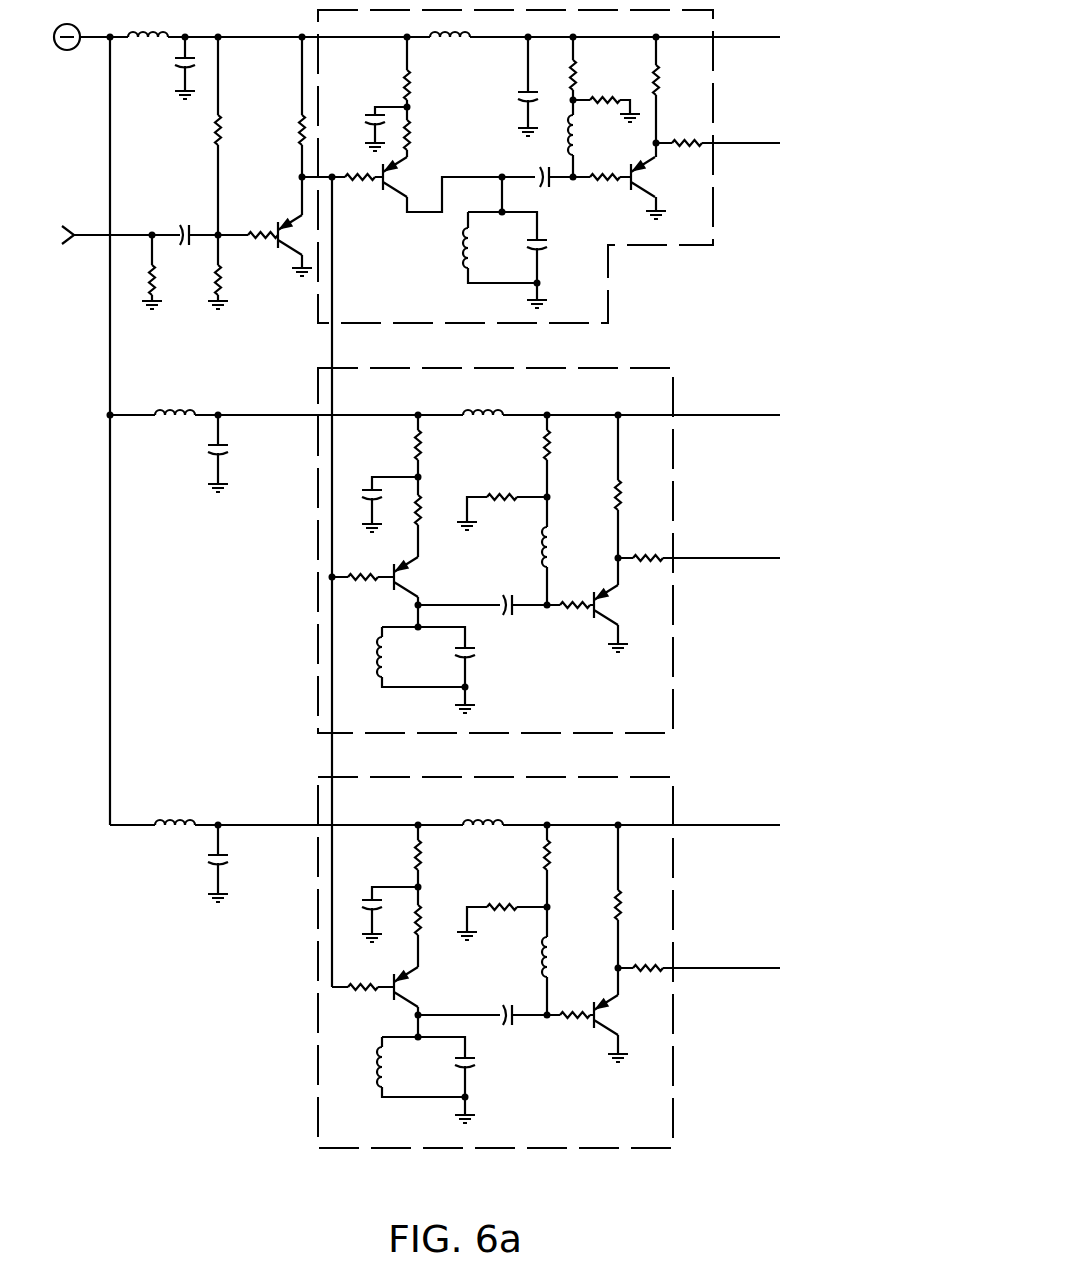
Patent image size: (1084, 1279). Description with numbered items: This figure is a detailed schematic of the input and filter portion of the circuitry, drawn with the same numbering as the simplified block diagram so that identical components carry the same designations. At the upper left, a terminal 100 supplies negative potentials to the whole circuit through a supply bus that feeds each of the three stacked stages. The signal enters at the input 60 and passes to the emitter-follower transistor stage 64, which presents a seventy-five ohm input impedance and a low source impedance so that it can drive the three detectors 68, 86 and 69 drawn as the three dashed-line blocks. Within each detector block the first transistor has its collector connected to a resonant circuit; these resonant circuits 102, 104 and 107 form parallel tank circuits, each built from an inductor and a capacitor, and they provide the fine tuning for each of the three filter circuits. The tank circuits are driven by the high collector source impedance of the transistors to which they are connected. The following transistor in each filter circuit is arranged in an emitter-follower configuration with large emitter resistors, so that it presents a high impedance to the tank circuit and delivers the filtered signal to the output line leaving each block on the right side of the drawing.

The terminal 100 is at (66, 50).
The RF input terminal 60 is at (84, 234).
The emitter-follower transistor stage 64 is at (280, 215).
The detector 86 is at (549, 166).
The resonant tank circuit 102 is at (564, 235).
The detector 68 is at (444, 550).
The resonant tank circuit 104 is at (470, 656).
The detector 69 is at (445, 962).
The resonant tank circuit 107 is at (470, 1066).